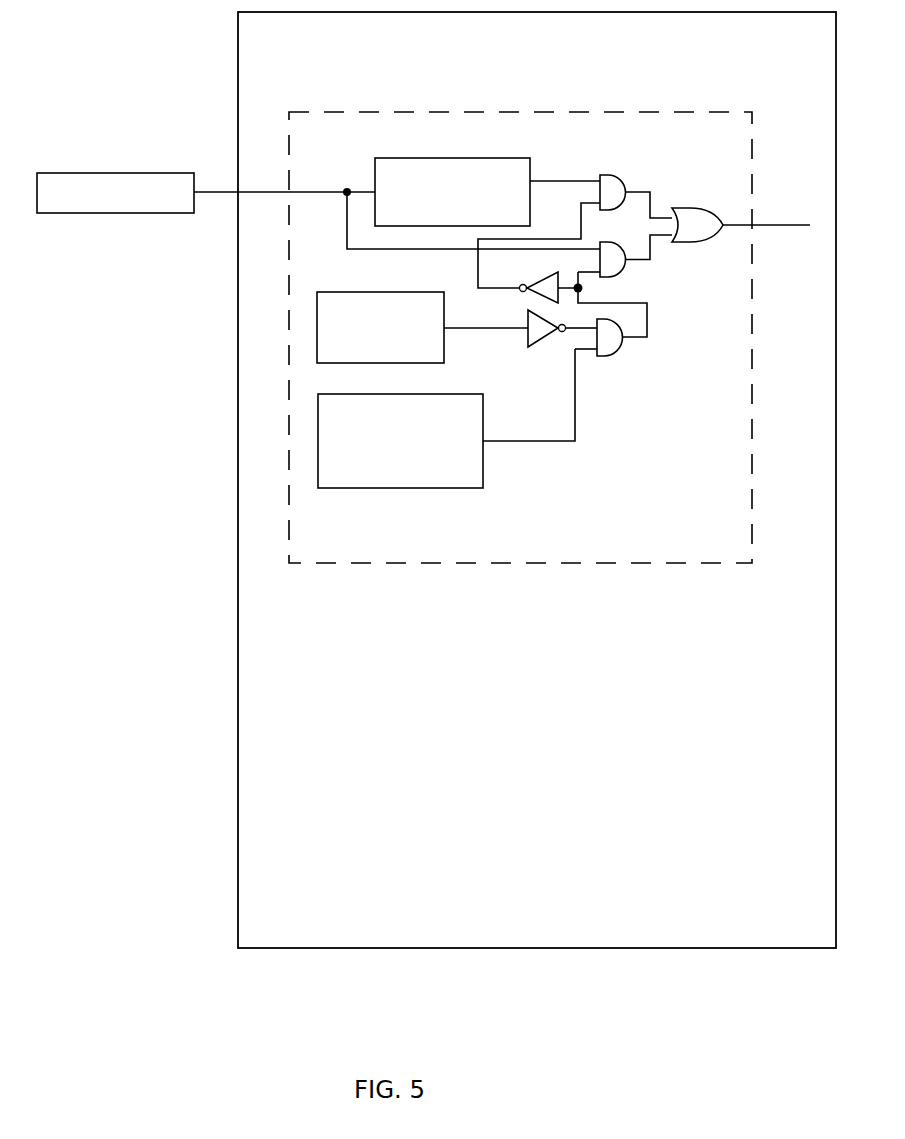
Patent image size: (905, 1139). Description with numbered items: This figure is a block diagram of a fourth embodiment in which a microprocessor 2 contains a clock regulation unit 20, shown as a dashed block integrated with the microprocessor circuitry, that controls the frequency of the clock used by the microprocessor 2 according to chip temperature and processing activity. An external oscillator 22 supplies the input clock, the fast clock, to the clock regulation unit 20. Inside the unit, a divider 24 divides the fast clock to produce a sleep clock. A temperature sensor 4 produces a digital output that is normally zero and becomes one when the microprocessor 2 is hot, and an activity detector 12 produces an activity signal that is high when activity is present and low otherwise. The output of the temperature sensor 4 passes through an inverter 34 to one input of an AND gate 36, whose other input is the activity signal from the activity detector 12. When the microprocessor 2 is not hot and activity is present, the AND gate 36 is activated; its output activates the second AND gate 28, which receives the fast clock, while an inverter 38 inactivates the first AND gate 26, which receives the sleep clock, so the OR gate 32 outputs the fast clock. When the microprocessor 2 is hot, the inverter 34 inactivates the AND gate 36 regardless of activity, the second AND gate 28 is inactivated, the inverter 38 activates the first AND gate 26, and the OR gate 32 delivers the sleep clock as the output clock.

The microprocessor 2 is at (238, 705).
The temperature sensor 4 is at (340, 292).
The activity detector 12 is at (383, 488).
The clock regulation unit 20 is at (525, 563).
The oscillator 22 is at (85, 173).
The divider 24 is at (441, 158).
The first AND gate 26 is at (605, 175).
The second AND gate 28 is at (620, 273).
The OR gate 32 is at (688, 208).
The inverter 34 is at (530, 345).
The AND gate 36 is at (615, 355).
The inverter 38 is at (553, 272).